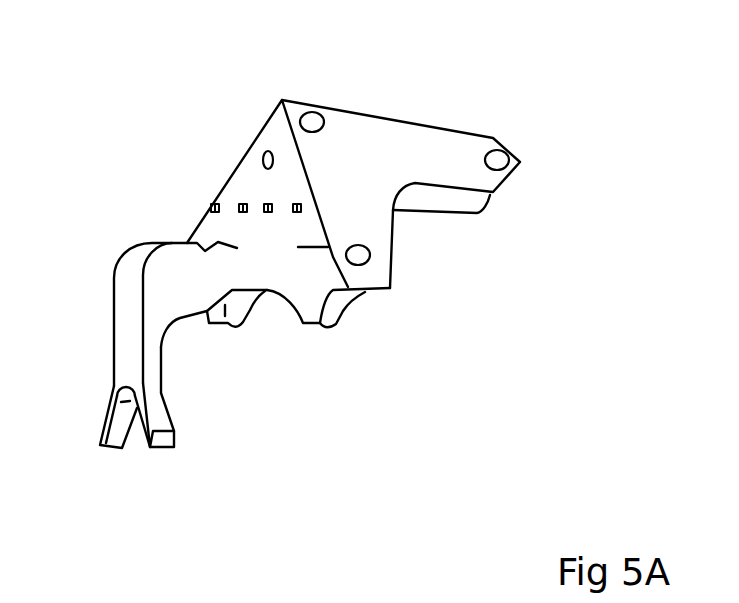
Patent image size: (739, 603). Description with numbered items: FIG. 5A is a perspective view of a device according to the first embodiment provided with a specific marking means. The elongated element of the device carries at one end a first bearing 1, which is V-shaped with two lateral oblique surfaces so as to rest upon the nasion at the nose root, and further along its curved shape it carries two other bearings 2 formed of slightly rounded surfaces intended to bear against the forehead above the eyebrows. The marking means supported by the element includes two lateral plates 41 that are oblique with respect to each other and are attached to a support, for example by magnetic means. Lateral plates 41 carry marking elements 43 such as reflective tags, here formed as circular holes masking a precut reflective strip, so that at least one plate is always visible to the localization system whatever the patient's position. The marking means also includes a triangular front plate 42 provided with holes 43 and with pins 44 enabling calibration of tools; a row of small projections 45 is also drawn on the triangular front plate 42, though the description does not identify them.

The first bearing 1 is at (132, 452).
The bearings 2 is at (235, 340).
The lateral plates 41 is at (445, 163).
The triangular front plate 42 is at (250, 192).
The marking elements 43 is at (360, 250).
The pins 44 is at (263, 162).
The studs 45 is at (268, 213).